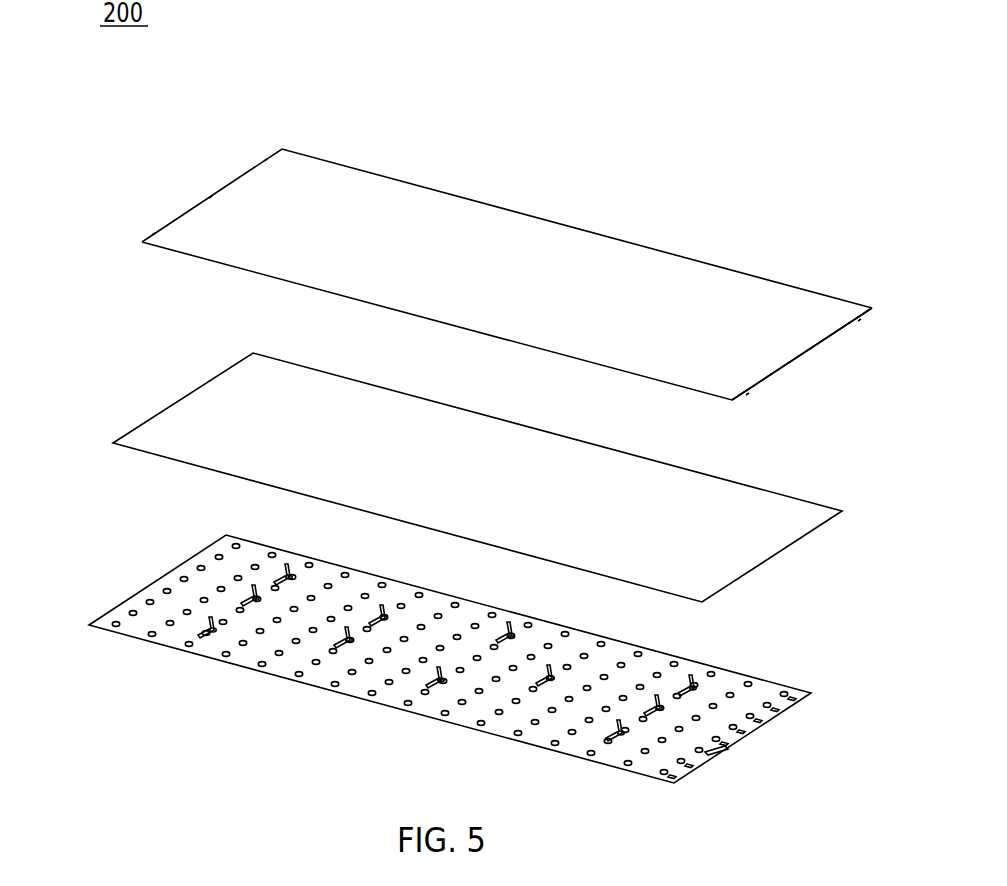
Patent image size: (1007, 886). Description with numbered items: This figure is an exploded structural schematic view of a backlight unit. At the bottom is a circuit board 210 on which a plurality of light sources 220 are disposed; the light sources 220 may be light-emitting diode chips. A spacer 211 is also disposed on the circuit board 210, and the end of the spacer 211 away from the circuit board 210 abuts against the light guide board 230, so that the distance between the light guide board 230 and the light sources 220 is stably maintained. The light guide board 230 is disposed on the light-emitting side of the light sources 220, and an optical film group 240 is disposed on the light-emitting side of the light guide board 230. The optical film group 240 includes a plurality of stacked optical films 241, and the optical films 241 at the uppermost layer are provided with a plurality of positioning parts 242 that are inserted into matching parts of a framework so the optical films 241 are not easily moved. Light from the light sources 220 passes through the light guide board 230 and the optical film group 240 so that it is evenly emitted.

The circuit board 210 is at (128, 602).
The spacer 211 is at (217, 615).
The light sources 220 is at (183, 580).
The light guide board 230 is at (190, 398).
The optical film group 240 is at (484, 277).
The optical films 241 is at (243, 185).
The positioning parts 242 is at (805, 355).